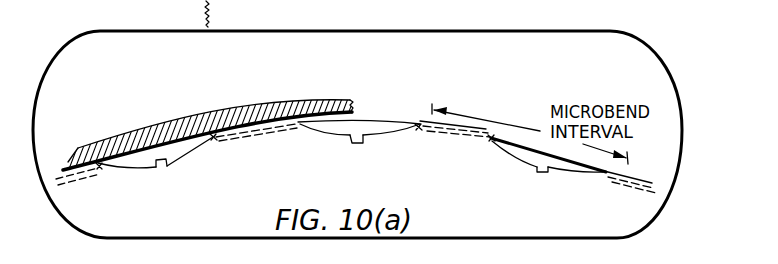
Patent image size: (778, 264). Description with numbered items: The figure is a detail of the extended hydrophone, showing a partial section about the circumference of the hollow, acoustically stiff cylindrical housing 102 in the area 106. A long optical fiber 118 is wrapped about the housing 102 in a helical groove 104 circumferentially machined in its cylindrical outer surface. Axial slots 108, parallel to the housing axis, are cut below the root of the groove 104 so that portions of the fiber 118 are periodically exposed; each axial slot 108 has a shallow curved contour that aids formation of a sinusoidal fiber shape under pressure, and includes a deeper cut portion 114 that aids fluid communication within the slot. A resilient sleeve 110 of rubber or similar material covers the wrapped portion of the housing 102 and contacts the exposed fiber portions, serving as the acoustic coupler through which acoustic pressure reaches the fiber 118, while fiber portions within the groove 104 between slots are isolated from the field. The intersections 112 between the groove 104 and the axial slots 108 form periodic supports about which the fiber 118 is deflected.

The cylindrical housing 102 is at (474, 200).
The helical groove 104 is at (263, 129).
The area 106 is at (165, 74).
The axial slot 108 is at (147, 169).
The resilient sleeve 110 is at (186, 117).
The intersection 112 is at (99, 166).
The deeper cut portion 114 is at (168, 166).
The optical fiber 118 is at (374, 120).